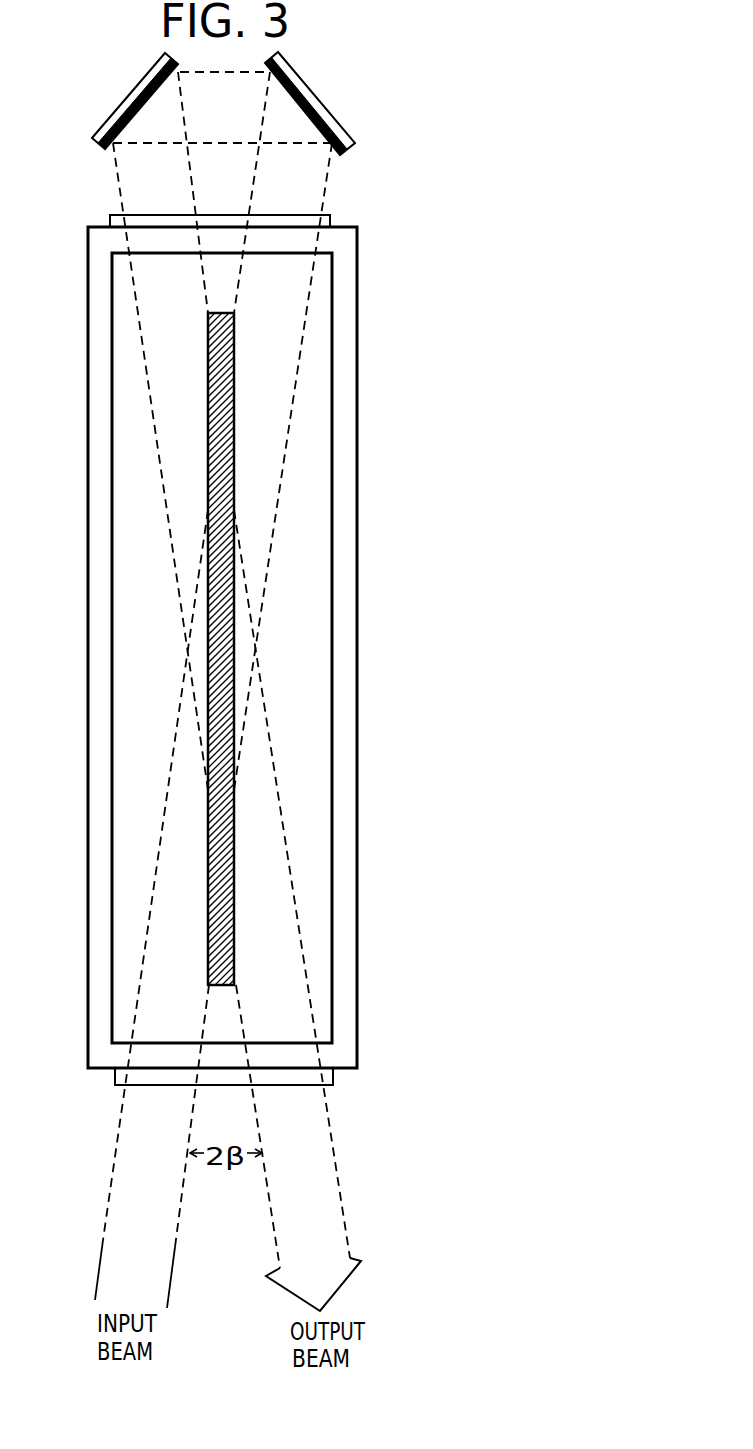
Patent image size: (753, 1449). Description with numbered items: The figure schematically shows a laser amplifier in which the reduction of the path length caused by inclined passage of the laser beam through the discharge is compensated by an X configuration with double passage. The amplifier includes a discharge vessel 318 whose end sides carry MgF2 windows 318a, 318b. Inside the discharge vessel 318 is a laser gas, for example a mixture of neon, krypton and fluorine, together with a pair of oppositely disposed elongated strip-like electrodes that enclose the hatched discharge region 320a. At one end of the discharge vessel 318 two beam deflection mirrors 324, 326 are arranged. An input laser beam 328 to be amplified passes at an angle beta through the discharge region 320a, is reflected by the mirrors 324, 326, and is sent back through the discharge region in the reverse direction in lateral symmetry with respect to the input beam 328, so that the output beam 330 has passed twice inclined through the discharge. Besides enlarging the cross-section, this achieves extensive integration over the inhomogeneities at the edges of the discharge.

The discharge vessel 318 is at (345, 668).
The MgF2 window 318a is at (307, 1078).
The MgF2 window 318b is at (300, 222).
The discharge region 320a is at (222, 602).
The beam deflection mirror 324 is at (310, 102).
The beam deflection mirror 326 is at (135, 97).
The input laser beam 328 is at (125, 1186).
The output beam 330 is at (325, 1173).